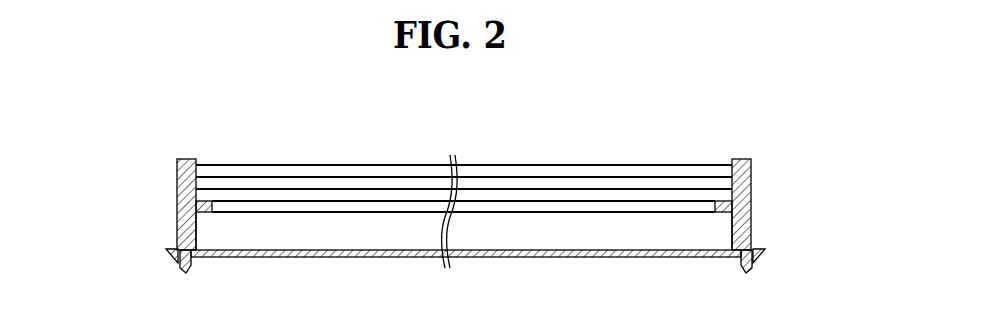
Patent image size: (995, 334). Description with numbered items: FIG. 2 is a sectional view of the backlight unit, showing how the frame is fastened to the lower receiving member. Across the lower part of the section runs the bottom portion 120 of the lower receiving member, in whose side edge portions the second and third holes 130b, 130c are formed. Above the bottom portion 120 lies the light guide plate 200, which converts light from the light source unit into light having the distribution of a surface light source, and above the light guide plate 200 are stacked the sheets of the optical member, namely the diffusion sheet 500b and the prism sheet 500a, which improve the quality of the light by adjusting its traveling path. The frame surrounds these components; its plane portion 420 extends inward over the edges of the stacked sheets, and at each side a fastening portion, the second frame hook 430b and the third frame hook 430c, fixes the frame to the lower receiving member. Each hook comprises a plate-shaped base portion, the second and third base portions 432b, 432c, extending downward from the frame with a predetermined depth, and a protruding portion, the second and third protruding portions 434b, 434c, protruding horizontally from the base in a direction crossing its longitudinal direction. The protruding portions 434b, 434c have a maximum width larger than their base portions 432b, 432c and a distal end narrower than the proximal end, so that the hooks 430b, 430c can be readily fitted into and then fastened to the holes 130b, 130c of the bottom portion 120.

The bottom portion 120 is at (573, 258).
The second hole 130b is at (742, 272).
The third hole 130c is at (188, 272).
The light guide plate 200 is at (630, 247).
The plane portion 420 is at (720, 212).
The second frame hook 430b is at (816, 215).
The third frame hook 430c is at (112, 215).
The second base portion 432b is at (753, 240).
The third base portion 432c is at (177, 245).
The second protruding portion 434b is at (758, 266).
The third protruding portion 434c is at (167, 256).
The prism sheet 500a is at (689, 172).
The diffusion sheet 500b is at (598, 193).